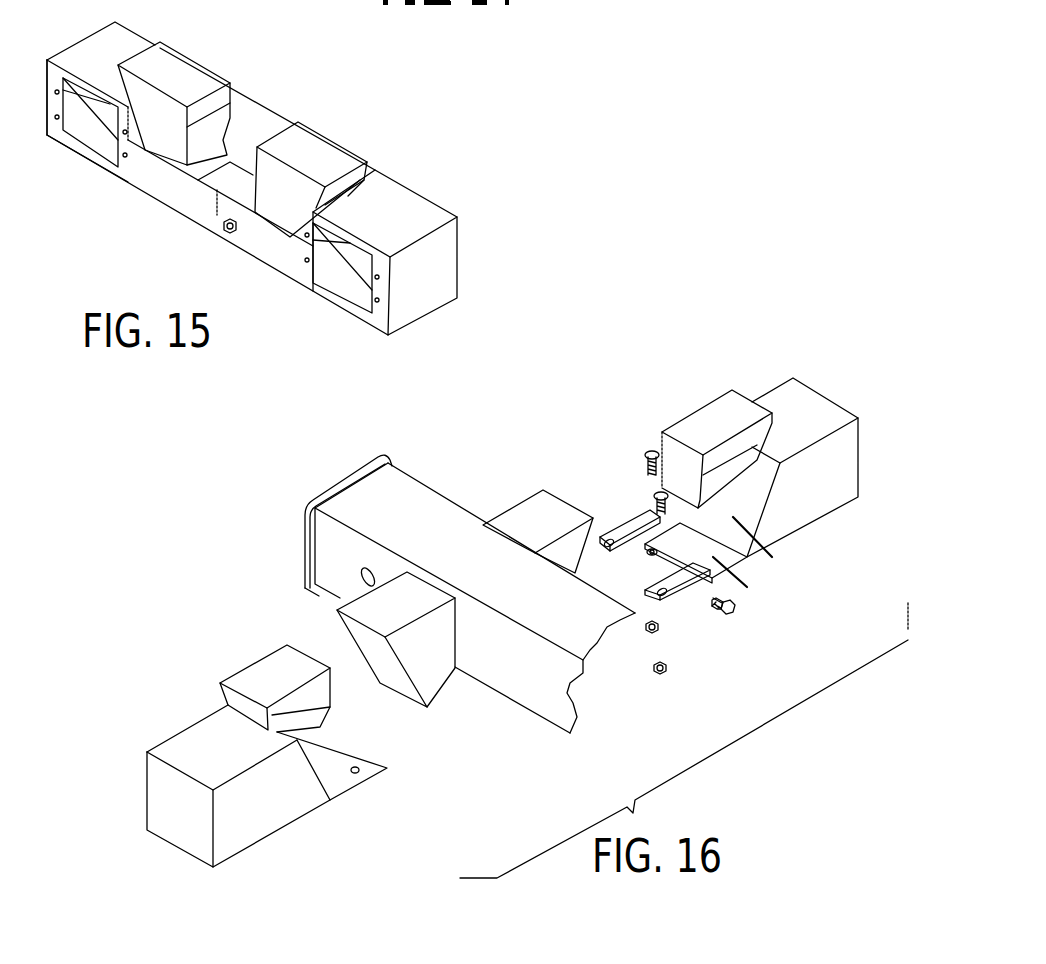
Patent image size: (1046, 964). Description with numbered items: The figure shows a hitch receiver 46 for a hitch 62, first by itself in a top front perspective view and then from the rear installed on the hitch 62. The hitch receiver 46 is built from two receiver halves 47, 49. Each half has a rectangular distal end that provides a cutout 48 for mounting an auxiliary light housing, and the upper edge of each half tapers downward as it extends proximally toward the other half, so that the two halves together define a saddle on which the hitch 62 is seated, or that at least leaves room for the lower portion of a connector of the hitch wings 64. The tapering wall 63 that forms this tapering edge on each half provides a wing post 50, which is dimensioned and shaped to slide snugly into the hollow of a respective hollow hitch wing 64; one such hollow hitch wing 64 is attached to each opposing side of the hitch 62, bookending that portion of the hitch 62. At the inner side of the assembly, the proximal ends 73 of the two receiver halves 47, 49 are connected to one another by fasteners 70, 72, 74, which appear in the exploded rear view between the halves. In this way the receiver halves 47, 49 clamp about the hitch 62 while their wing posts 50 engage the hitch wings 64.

In FIG. 15, the hitch receiver 46 is at (492, 153).
In FIG. 15, the receiver half 47 is at (90, 43).
In FIG. 16, the receiver half 47 is at (803, 398).
In FIG. 15, the cutout 48 is at (118, 146).
In FIG. 15, the receiver half 49 is at (456, 258).
In FIG. 16, the receiver half 49 is at (188, 745).
In FIG. 15, the wing post 50 is at (188, 68).
In FIG. 16, the wing post 50 is at (697, 420).
In FIG. 16, the hitch 62 is at (355, 500).
In FIG. 16, the tapering wall 63 is at (729, 550).
In FIG. 16, the hollow hitch wing 64 is at (540, 512).
In FIG. 15, the fastener 70 is at (216, 223).
In FIG. 16, the fastener 70 is at (645, 466).
In FIG. 16, the fastener 72 is at (673, 668).
In FIG. 16, the proximal end 73 is at (746, 587).
In FIG. 16, the fastener 74 is at (640, 512).